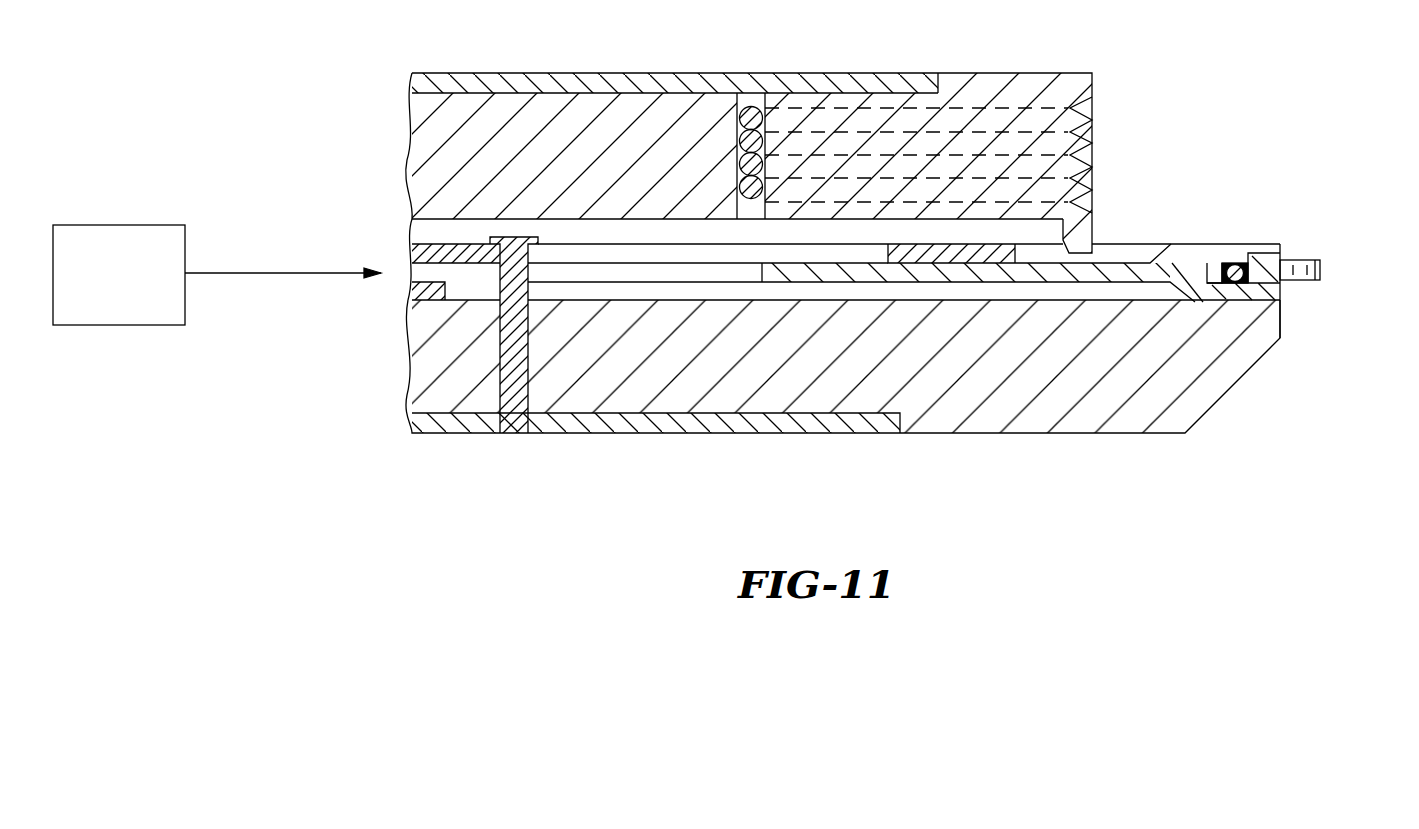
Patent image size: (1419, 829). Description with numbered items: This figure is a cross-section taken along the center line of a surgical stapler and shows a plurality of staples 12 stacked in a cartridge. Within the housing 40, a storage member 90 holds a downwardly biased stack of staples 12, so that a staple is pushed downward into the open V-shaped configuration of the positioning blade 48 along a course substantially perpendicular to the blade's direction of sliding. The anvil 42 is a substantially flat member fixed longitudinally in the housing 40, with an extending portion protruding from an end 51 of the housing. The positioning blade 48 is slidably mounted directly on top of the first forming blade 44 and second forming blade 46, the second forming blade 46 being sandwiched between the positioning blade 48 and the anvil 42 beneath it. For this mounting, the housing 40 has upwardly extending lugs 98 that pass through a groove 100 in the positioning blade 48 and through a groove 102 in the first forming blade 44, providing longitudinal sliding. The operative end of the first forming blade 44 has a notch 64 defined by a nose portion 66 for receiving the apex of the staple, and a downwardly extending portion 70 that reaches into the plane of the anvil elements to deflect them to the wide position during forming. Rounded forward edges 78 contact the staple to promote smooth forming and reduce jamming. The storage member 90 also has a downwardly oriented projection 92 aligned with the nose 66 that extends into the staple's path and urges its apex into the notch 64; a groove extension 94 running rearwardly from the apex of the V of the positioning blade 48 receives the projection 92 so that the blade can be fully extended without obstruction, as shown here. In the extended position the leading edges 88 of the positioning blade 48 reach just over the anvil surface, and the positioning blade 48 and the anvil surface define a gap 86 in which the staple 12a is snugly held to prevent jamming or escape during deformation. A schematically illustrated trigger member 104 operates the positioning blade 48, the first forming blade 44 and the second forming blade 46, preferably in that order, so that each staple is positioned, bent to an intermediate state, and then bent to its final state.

The staple 12 is at (748, 105).
The staple 12a is at (1240, 262).
The housing 40 is at (610, 78).
The anvil 42 is at (985, 300).
The first forming blade 44 is at (870, 276).
The second forming blade 46 is at (1290, 260).
The positioning blade 48 is at (962, 243).
The end of housing 51 is at (930, 78).
The notch 64 is at (1218, 262).
The nose portion 66 is at (1261, 258).
The downwardly extending portion 70 is at (1233, 297).
The forward edges 78 is at (1322, 272).
The gap 86 is at (1222, 262).
The leading edges 88 is at (1197, 250).
The storage member 90 is at (1087, 103).
The downwardly oriented projection 92 is at (1085, 238).
The groove extension 94 is at (1053, 250).
The lugs 98 is at (507, 390).
The groove 100 is at (738, 252).
The groove 102 is at (600, 272).
The trigger member 104 is at (137, 325).